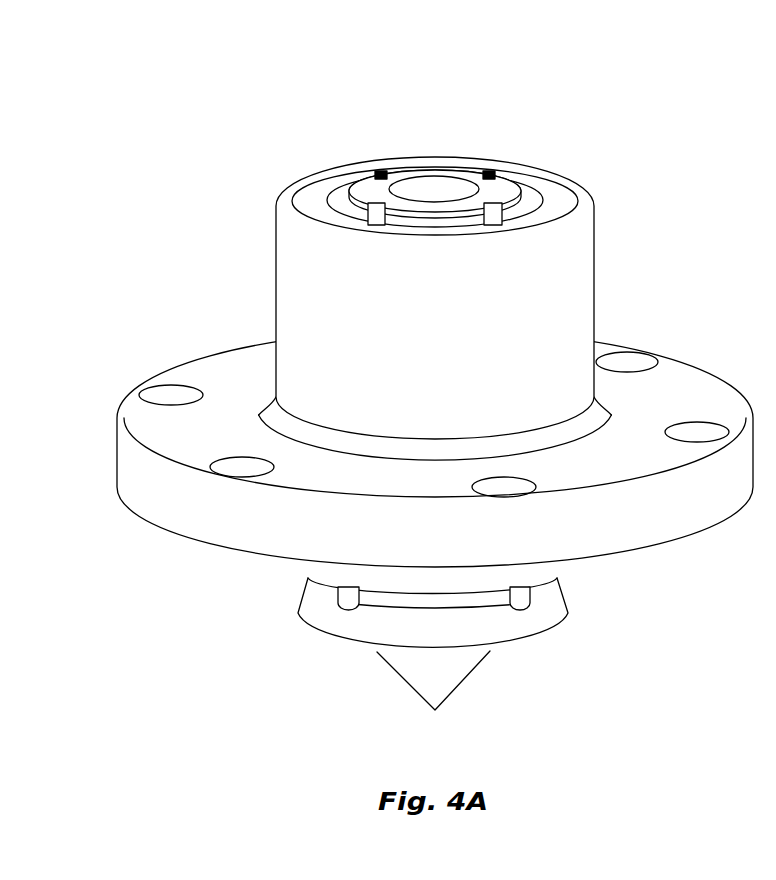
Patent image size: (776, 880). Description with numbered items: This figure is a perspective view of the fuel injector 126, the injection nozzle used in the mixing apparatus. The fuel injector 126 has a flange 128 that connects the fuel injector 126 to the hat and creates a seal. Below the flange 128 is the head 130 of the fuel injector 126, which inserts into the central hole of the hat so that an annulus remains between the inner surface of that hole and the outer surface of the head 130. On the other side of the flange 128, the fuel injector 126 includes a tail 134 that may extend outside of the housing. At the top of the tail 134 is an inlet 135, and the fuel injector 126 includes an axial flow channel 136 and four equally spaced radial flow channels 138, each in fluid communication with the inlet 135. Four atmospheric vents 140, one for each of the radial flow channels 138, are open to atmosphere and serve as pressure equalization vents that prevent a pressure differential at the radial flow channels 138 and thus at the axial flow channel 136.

The fuel injector 126 is at (445, 393).
The flange 128 is at (687, 373).
The head 130 is at (317, 627).
The tail 134 is at (585, 273).
The inlet 135 is at (437, 188).
The axial flow channel 136 is at (435, 708).
The radial flow channels 138 is at (338, 598).
The atmospheric vents 140 is at (376, 173).